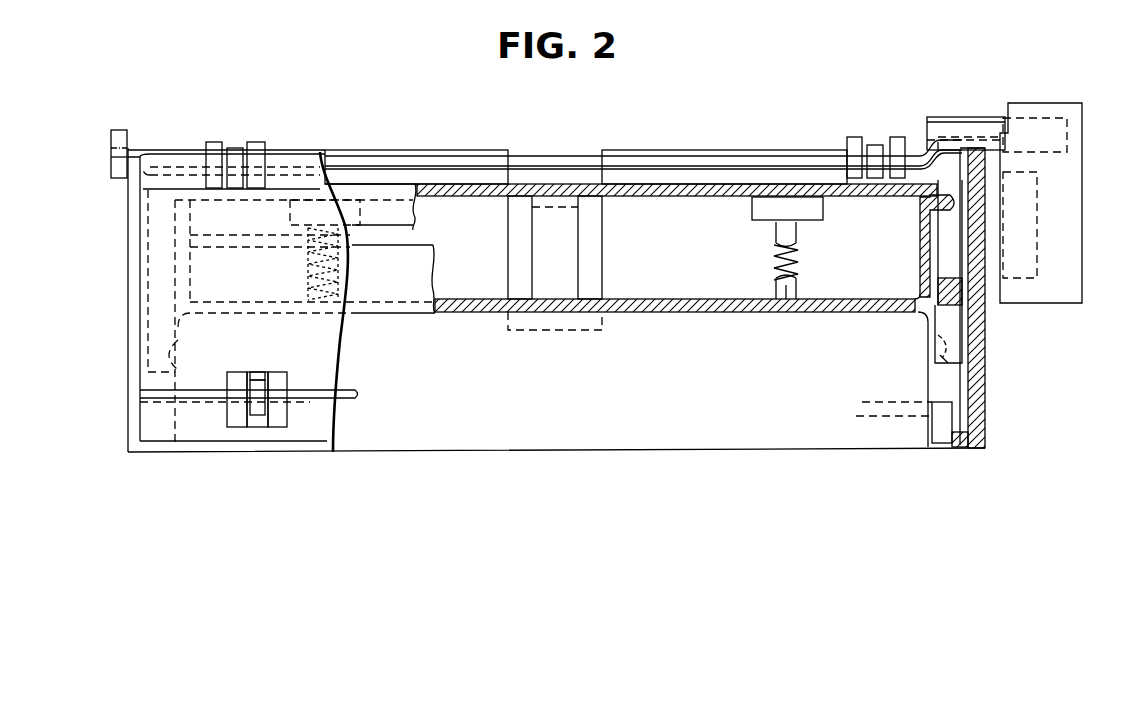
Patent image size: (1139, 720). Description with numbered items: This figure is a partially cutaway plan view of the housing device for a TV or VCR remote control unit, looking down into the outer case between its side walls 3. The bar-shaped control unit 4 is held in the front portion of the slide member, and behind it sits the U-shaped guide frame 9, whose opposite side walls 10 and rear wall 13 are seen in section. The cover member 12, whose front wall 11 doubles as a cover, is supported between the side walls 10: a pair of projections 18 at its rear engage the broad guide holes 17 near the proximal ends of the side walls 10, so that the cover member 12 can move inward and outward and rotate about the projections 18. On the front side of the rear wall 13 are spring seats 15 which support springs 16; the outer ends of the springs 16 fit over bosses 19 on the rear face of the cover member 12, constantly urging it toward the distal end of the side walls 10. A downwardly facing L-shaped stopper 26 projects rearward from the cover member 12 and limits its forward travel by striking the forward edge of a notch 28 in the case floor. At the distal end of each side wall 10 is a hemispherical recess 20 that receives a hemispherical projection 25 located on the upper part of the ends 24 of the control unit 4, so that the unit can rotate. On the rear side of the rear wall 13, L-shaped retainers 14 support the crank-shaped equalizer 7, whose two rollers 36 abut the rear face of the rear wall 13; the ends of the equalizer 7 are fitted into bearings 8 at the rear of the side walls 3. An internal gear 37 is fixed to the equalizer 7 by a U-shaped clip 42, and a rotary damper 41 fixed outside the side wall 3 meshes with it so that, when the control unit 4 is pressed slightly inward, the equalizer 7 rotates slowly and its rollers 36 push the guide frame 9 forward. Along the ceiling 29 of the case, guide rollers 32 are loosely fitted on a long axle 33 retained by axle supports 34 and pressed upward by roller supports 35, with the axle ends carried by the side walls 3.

The side wall 3 is at (140, 332).
The control unit 4 is at (492, 450).
The equalizer 7 is at (728, 162).
The bearing 8 is at (119, 130).
The guide frame 9 is at (655, 190).
The side wall 10 is at (155, 270).
The front wall 11 is at (678, 312).
The cover member 12 is at (425, 320).
The rear wall 13 is at (462, 176).
The L-shaped retainer 14 is at (212, 142).
The spring seat 15 is at (355, 212).
The spring 16 is at (340, 268).
The guide hole 17 is at (945, 268).
The projection 18 is at (940, 215).
The boss 19 is at (790, 312).
The hemispherical recess 20 is at (945, 360).
The end 24 is at (945, 398).
The hemispherical projection 25 is at (935, 340).
The stopper 26 is at (585, 238).
The notch 28 is at (510, 248).
The ceiling 29 is at (158, 430).
The guide roller 32 is at (257, 415).
The axle 33 is at (318, 390).
The axle support 34 is at (237, 425).
The roller support 35 is at (257, 372).
The roller 36 is at (232, 148).
The internal gear 37 is at (1073, 160).
The rotary damper 41 is at (1032, 243).
The clip 42 is at (947, 117).